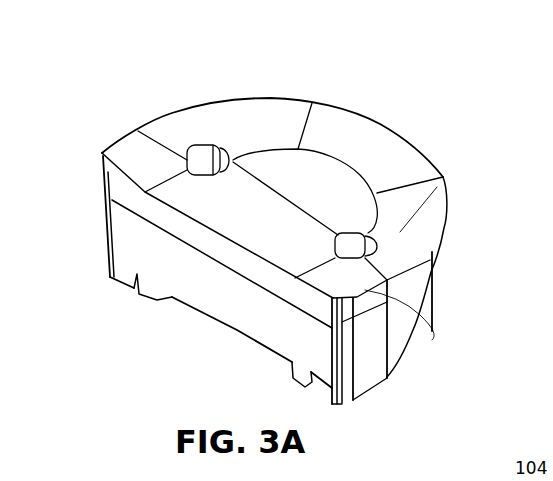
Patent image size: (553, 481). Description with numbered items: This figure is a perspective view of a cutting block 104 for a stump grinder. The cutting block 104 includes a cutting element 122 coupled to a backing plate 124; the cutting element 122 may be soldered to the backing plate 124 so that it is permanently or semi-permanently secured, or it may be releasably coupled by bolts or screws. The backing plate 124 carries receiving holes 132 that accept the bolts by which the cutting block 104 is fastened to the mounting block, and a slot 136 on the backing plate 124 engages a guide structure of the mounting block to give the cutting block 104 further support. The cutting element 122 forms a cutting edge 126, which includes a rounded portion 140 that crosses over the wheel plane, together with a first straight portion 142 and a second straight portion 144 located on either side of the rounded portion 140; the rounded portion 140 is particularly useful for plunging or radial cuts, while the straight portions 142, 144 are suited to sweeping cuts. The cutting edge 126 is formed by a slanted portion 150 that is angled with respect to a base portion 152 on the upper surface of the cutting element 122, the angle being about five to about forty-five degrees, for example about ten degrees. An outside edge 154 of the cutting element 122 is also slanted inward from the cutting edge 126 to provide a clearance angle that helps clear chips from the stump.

The cutting block 104 is at (474, 101).
The cutting element 122 is at (170, 142).
The backing plate 124 is at (133, 247).
The cutting edge 126 is at (290, 97).
The receiving holes 132 is at (407, 252).
The slot 136 is at (154, 300).
The rounded portion 140 is at (367, 118).
The first straight portion 142 is at (122, 140).
The second straight portion 144 is at (433, 332).
The slanted portion 150 is at (443, 176).
The base portion 152 is at (292, 175).
The outside edge 154 is at (402, 343).